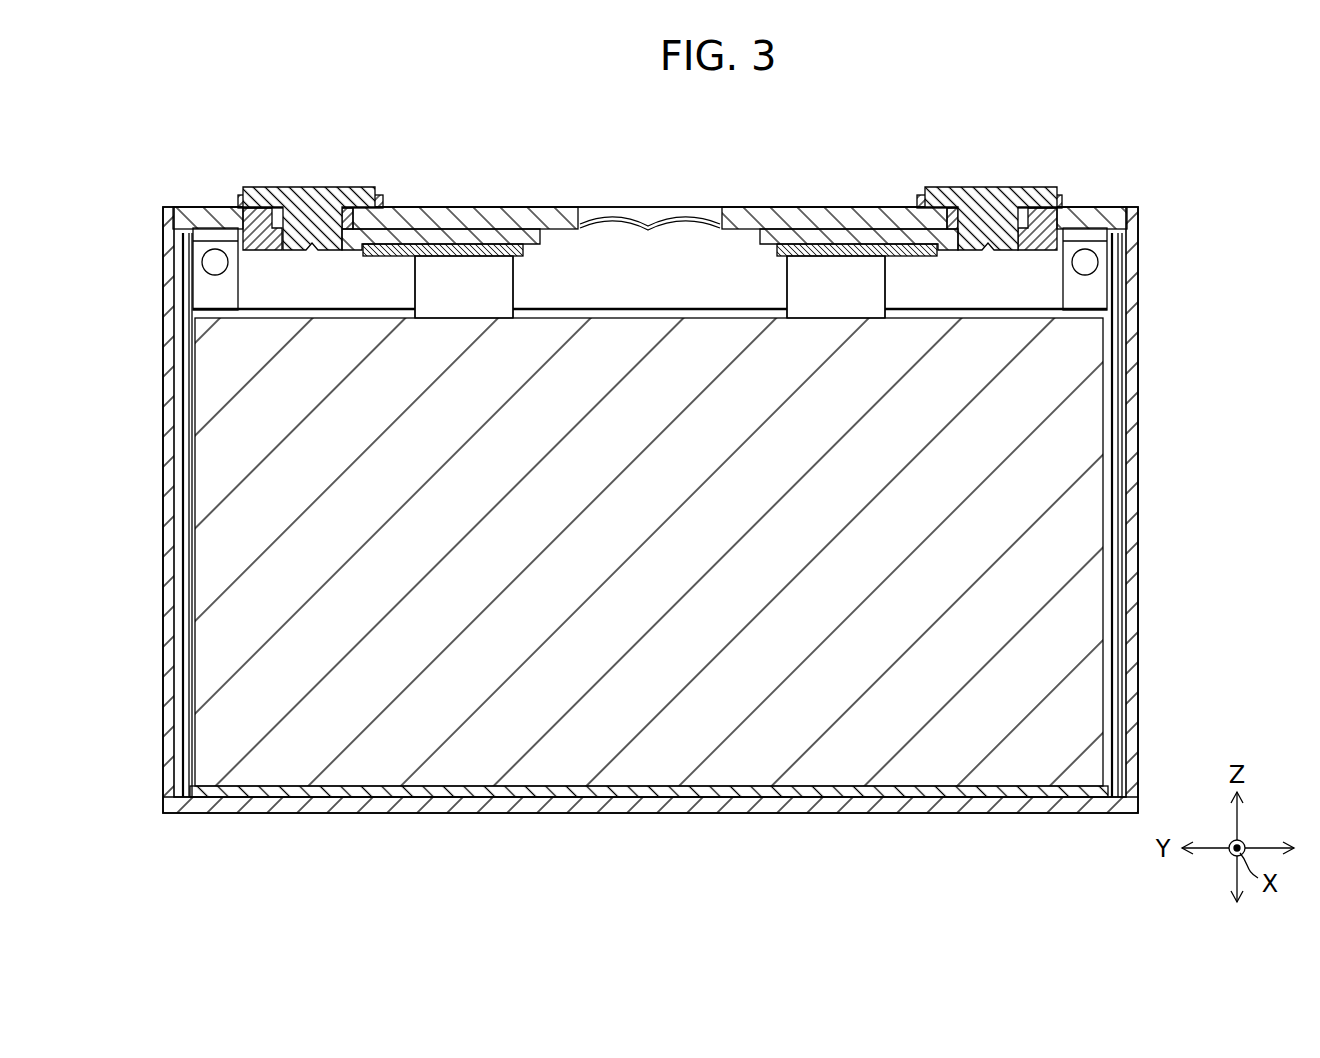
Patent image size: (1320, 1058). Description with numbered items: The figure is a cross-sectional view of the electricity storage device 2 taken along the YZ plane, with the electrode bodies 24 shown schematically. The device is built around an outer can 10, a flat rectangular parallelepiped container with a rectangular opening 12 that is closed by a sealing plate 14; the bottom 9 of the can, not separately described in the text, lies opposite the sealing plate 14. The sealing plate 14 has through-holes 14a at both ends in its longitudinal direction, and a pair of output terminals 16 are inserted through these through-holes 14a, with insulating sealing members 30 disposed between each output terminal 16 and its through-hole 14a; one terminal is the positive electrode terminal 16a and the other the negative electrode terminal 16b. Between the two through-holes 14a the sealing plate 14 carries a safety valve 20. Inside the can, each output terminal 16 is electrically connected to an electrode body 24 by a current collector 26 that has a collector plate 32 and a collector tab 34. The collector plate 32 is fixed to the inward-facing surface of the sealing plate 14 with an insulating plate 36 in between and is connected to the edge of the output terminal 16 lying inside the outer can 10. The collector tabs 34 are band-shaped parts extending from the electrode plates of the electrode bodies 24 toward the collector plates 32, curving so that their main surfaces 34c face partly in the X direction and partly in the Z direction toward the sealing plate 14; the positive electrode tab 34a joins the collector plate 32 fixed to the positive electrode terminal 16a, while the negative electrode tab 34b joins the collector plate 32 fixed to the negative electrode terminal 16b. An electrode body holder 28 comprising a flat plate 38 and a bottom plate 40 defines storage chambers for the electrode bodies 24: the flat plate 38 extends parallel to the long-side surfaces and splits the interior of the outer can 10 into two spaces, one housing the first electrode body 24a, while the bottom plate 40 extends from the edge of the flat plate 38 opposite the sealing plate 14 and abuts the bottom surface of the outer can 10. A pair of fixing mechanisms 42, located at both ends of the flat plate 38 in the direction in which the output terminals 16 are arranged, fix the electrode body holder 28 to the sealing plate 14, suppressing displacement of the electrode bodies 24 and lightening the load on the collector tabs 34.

The electricity storage device 2 is at (613, 863).
The bottom wall of battery case 9 is at (1085, 819).
The outer can 10 is at (682, 501).
The opening 12 is at (662, 512).
The sealing plate 14 is at (650, 176).
The through-hole 14a is at (325, 187).
The output terminal 16 is at (652, 171).
The positive electrode terminal 16a is at (995, 195).
The negative electrode terminal 16b is at (285, 187).
The safety valve 20 is at (620, 214).
The electrode body 24 is at (729, 552).
The first electrode body 24a is at (1085, 442).
The current collector 26 is at (411, 274).
The electrode body holder 28 is at (664, 301).
The insulating sealing member 30 is at (386, 198).
The collector plate 32 is at (529, 242).
The collector tab 34 is at (650, 214).
The positive electrode tab 34a is at (787, 283).
The negative electrode tab 34b is at (515, 285).
The main surface 34c is at (500, 298).
The insulating plate 36 is at (471, 240).
The flat plate 38 is at (1027, 308).
The bottom plate 40 is at (1043, 783).
The fixing mechanism 42 is at (193, 268).